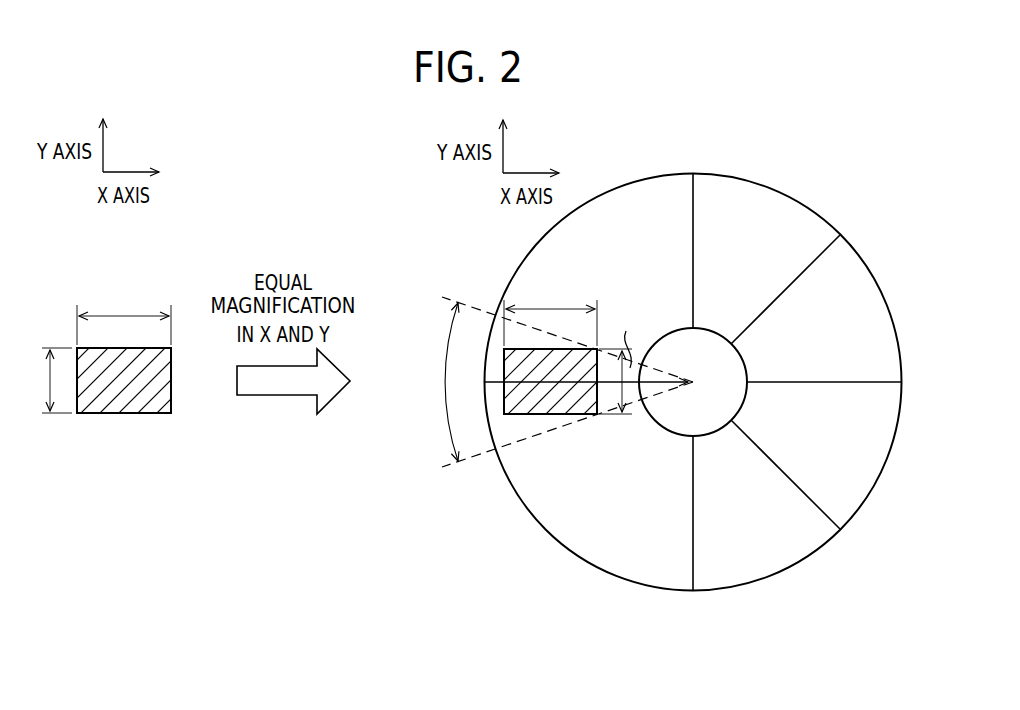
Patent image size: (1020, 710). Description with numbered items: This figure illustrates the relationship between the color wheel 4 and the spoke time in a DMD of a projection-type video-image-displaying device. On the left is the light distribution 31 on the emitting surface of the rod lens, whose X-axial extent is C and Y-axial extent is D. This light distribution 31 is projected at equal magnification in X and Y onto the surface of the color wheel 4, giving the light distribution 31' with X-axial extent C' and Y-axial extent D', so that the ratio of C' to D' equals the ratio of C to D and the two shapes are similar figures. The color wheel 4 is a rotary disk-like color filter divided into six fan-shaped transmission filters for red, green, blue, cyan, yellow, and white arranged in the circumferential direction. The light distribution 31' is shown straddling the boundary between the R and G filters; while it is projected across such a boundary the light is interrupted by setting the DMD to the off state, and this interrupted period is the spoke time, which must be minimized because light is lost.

The color wheel 4 is at (757, 178).
The light distribution 31 is at (98, 374).
The light distribution 31' is at (545, 381).